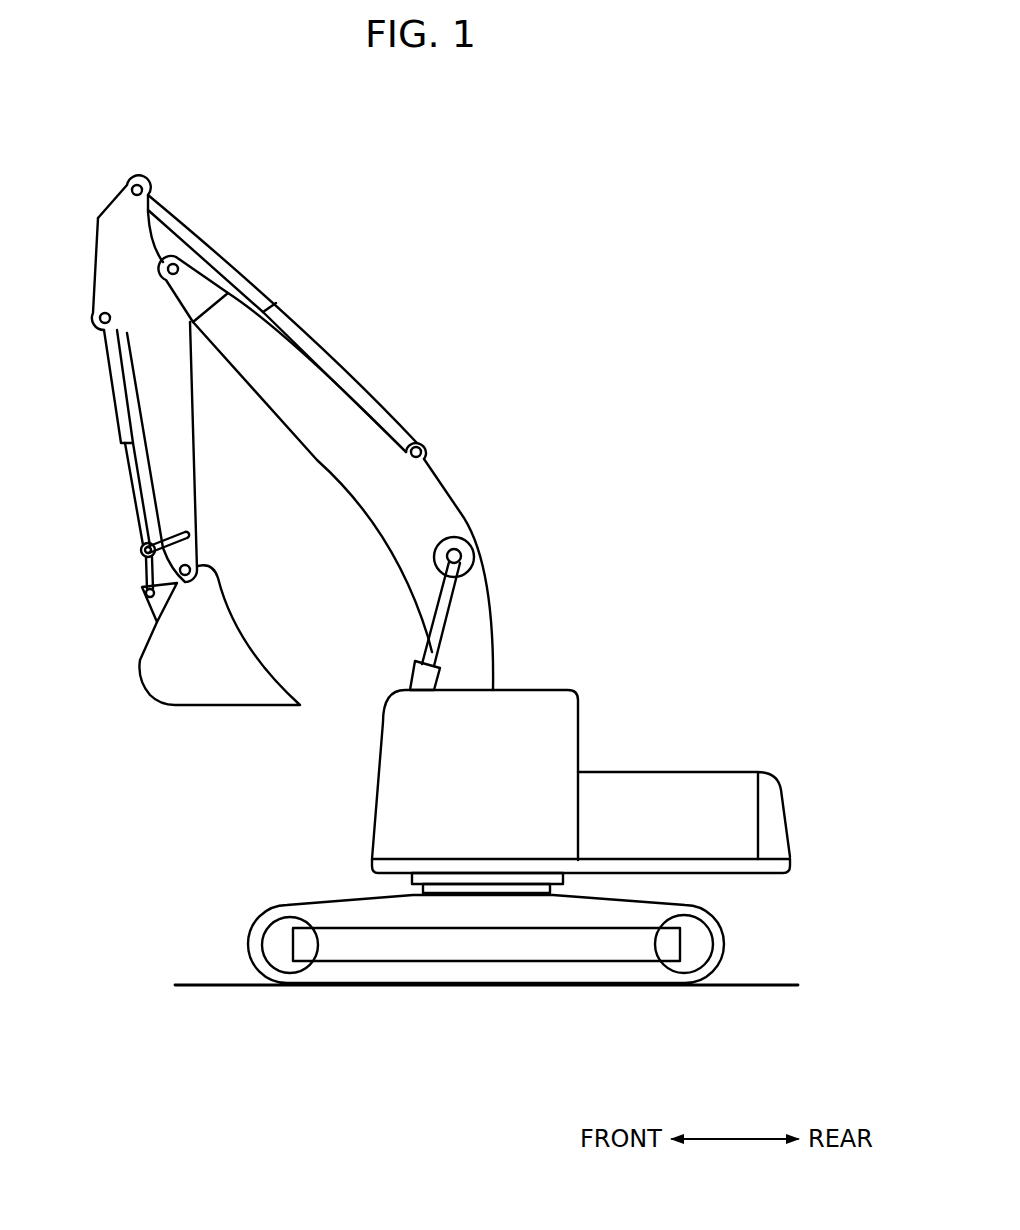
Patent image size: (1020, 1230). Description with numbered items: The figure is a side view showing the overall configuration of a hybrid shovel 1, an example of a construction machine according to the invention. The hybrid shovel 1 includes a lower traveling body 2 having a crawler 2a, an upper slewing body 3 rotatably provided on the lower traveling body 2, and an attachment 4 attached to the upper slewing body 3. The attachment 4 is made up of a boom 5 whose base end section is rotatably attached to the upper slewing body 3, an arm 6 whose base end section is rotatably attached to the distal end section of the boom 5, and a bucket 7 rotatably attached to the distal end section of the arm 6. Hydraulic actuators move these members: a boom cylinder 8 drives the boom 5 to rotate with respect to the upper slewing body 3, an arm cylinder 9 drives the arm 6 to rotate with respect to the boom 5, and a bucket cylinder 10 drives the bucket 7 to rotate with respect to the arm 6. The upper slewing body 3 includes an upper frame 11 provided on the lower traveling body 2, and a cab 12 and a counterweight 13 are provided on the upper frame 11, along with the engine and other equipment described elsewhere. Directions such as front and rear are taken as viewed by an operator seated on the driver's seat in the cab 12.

The hybrid shovel 1 is at (649, 372).
The lower traveling body 2 is at (775, 953).
The crawler 2a is at (723, 929).
The upper slewing body 3 is at (735, 690).
The attachment 4 is at (380, 303).
The boom 5 is at (498, 590).
The arm 6 is at (193, 434).
The bucket 7 is at (247, 645).
The boom cylinder 8 is at (415, 669).
The arm cylinder 9 is at (363, 383).
The bucket cylinder 10 is at (121, 430).
The upper frame 11 is at (372, 870).
The cab 12 is at (535, 688).
The counterweight 13 is at (790, 778).